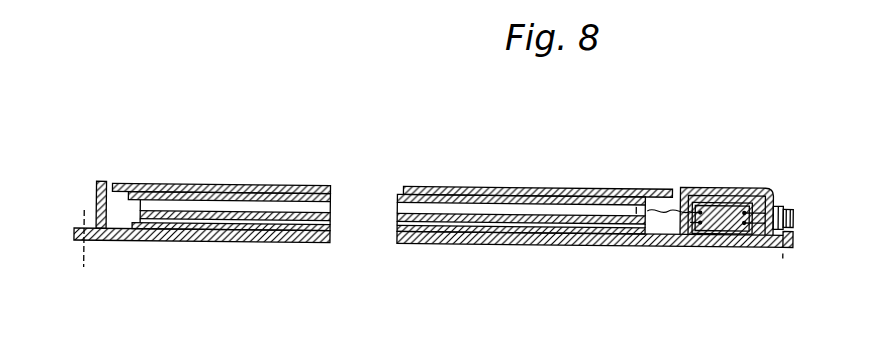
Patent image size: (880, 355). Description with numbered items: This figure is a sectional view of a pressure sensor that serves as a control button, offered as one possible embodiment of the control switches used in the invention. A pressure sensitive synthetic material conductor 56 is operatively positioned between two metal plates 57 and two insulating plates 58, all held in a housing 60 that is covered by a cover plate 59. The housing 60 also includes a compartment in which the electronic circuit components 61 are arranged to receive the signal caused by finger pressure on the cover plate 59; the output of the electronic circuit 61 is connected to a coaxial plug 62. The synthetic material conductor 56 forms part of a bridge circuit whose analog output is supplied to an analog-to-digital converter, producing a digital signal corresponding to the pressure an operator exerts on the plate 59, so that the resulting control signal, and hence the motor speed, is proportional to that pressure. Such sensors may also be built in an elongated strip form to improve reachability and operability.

The pressure sensitive synthetic material conductor 56 is at (332, 201).
The metal plates 57 is at (556, 203).
The insulating plates 58 is at (463, 226).
The cover plate 59 is at (265, 182).
The housing 60 is at (287, 240).
The electronic circuit components 61 is at (720, 211).
The coaxial plug 62 is at (797, 207).